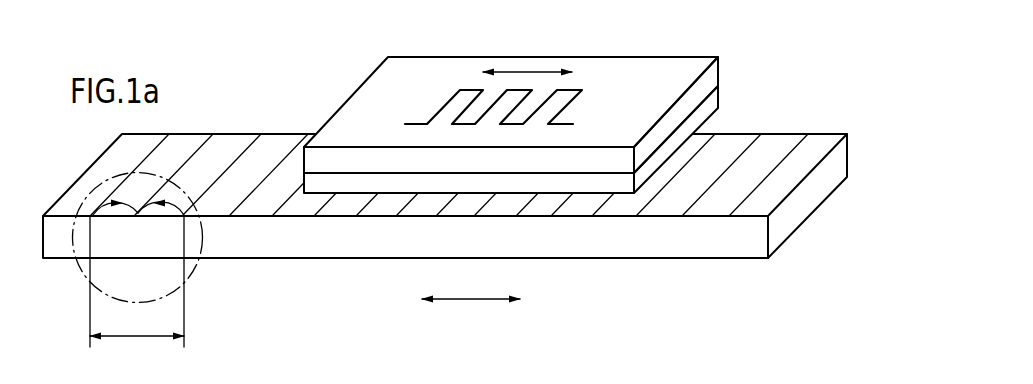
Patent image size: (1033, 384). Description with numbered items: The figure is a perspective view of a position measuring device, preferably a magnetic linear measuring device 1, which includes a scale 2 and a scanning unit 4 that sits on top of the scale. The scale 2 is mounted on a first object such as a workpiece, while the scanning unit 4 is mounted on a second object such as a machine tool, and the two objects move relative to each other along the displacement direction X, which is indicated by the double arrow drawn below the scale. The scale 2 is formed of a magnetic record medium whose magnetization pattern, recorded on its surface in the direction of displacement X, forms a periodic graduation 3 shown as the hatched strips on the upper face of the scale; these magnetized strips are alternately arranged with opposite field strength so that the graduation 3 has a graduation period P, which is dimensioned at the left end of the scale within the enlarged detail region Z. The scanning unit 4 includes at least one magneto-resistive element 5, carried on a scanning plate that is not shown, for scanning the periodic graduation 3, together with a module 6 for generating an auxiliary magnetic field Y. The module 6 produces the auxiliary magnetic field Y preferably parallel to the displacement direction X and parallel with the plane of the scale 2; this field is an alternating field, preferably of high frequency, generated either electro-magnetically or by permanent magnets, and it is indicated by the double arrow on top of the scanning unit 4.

The magnetic linear measuring device 1 is at (526, 98).
The scale 2 is at (743, 247).
The periodic graduation 3 is at (788, 147).
The scanning unit 4 is at (611, 109).
The magneto-resistive element 5 is at (717, 100).
The module 6 is at (650, 78).
The auxiliary magnetic field Y is at (530, 72).
The displacement direction X is at (471, 318).
The detail region Z is at (192, 272).
The graduation period P is at (137, 281).